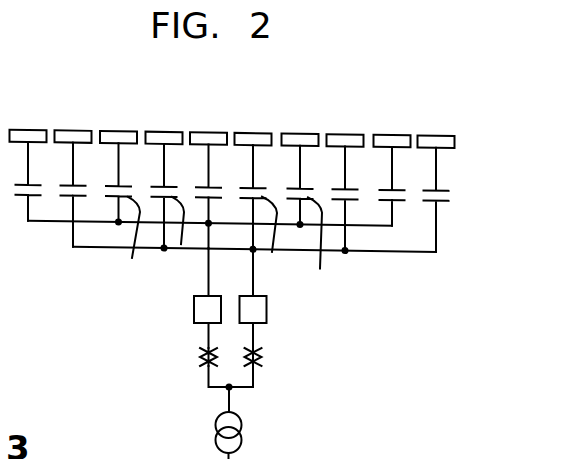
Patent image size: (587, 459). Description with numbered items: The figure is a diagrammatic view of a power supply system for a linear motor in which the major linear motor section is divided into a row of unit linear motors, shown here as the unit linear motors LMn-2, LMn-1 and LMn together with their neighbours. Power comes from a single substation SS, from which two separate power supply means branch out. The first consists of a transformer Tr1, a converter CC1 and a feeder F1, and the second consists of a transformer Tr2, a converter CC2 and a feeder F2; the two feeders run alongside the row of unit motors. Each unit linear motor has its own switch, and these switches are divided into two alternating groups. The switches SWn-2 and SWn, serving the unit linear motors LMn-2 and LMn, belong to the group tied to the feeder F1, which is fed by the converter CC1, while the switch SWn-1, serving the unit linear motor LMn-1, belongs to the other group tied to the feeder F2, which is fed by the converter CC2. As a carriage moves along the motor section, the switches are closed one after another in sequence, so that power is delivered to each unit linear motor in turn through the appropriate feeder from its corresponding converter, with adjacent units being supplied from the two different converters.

The unit linear motor LMn-2 is at (124, 166).
The unit linear motor LMn-1 is at (163, 128).
The unit linear motor LMn is at (209, 153).
The switch SWn-2 is at (125, 240).
The switch SWn-1 is at (181, 234).
The switch SWn is at (211, 186).
The feeder F1 is at (34, 221).
The feeder F2 is at (82, 247).
The converter CC1 is at (194, 311).
The converter CC2 is at (266, 311).
The transformer Tr1 is at (189, 362).
The transformer Tr2 is at (271, 362).
The substation SS is at (242, 434).